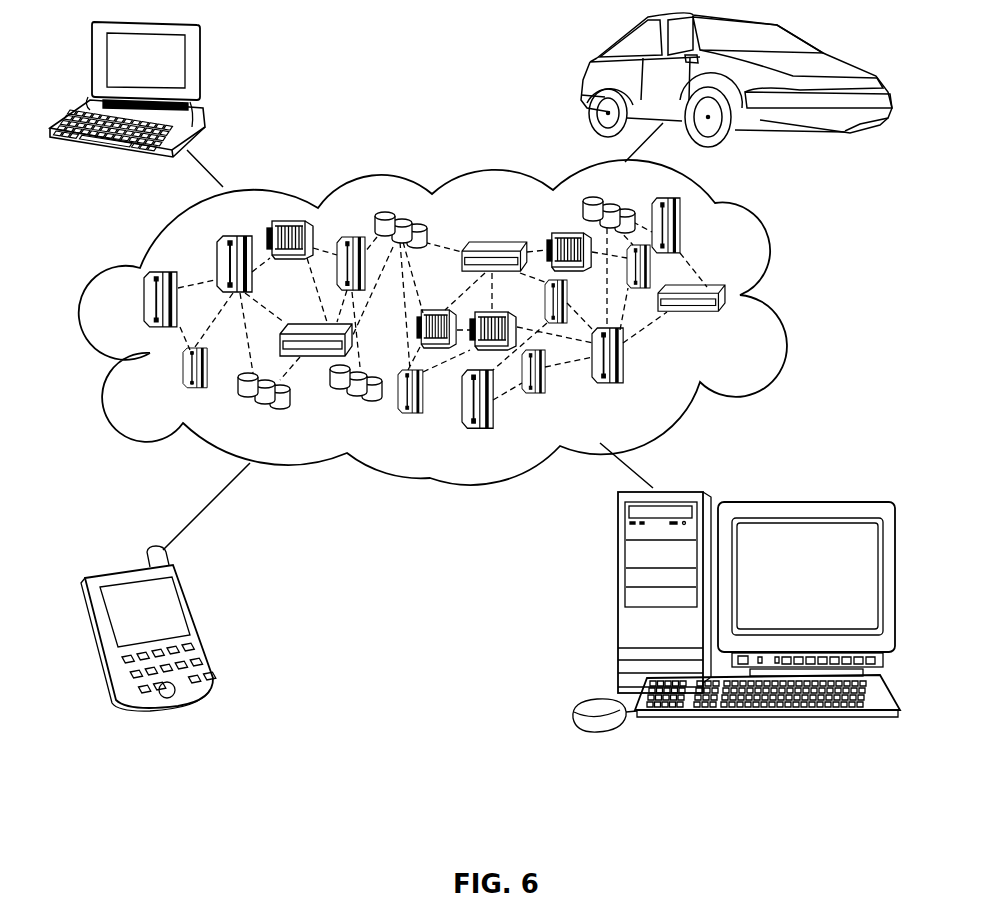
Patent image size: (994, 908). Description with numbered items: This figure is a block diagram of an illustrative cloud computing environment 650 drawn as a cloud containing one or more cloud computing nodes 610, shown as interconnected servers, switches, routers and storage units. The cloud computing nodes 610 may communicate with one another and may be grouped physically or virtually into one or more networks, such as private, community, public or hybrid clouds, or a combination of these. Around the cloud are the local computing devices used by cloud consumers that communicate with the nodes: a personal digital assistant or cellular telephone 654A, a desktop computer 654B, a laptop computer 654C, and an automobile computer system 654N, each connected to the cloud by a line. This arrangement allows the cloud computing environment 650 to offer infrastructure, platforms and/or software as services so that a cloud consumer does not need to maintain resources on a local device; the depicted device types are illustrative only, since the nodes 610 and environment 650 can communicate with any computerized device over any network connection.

The cloud computing nodes 610 is at (749, 318).
The cloud computing environment 650 is at (767, 258).
The personal digital assistant (PDA) or cellular telephone 654A is at (197, 620).
The desktop computer 654B is at (617, 600).
The laptop computer 654C is at (200, 68).
The automobile computer system 654N is at (590, 67).